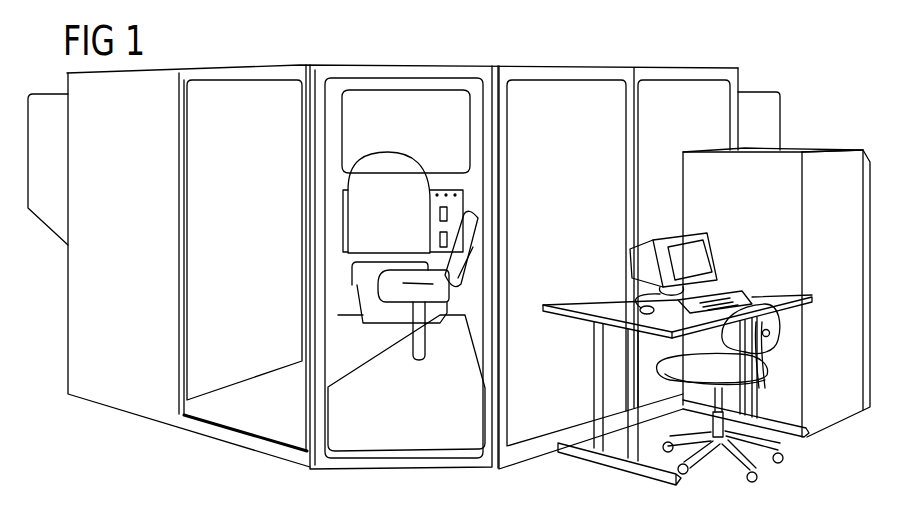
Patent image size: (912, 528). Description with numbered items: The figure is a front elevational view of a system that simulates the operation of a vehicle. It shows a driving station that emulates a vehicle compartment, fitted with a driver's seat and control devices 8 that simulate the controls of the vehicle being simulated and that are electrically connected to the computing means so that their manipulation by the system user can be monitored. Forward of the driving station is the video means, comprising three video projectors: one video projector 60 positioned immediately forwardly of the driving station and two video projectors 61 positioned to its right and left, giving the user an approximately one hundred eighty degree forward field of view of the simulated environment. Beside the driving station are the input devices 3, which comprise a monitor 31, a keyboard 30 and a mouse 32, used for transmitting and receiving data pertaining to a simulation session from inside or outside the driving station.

The video projectors 61 is at (257, 97).
The video projector 60 is at (419, 101).
The control devices 8 is at (457, 202).
The input devices 3 is at (707, 247).
The monitor 31 is at (700, 263).
The keyboard 30 is at (740, 292).
The mouse 32 is at (601, 295).